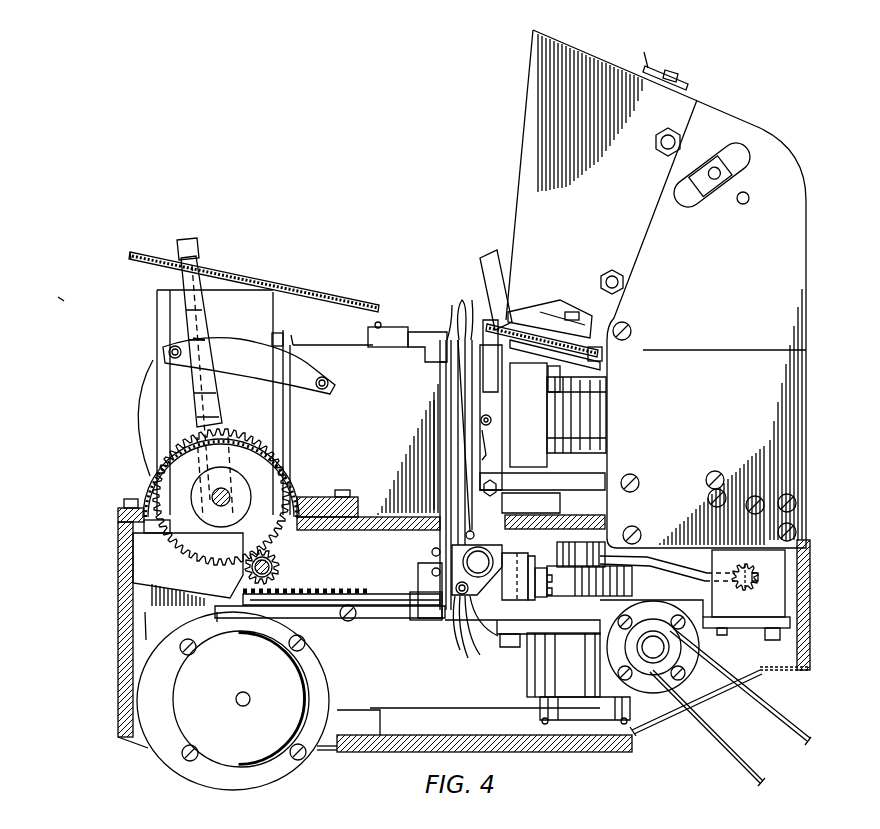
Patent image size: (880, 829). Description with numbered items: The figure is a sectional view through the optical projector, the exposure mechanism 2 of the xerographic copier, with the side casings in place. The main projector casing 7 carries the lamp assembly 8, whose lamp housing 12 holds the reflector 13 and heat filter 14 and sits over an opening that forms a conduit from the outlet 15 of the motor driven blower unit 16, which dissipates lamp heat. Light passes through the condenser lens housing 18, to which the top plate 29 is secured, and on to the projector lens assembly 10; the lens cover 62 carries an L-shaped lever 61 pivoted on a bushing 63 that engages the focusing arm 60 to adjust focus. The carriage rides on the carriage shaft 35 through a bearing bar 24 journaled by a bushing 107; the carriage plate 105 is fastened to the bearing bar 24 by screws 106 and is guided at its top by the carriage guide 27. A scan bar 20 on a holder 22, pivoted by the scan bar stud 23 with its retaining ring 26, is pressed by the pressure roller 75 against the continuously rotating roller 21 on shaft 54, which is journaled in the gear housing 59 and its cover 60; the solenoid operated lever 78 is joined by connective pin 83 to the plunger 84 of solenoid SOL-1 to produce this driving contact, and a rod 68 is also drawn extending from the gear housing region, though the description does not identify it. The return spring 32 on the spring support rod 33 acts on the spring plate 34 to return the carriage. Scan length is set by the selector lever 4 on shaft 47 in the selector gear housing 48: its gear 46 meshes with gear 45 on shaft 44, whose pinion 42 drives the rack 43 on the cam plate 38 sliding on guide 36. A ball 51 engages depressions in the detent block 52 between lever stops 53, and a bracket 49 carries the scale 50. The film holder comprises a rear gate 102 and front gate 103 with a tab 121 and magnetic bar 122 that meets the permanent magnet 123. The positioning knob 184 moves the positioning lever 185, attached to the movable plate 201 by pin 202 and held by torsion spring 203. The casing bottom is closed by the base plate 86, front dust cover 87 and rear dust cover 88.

The exposure mechanism 2 is at (112, 527).
The selector lever 4 is at (200, 243).
The main projector casing 7 is at (120, 600).
The lamp assembly 8 is at (145, 314).
The projector lens assembly 10 is at (652, 401).
The lamp housing 12 is at (182, 292).
The reflector 13 is at (153, 442).
The heat filter 14 is at (286, 420).
The blower outlet 15 is at (171, 592).
The motor driven blower unit 16 is at (330, 643).
The condenser lens housing 18 is at (318, 332).
The scan bar 20 is at (552, 590).
The roller 21 is at (632, 580).
The holder 22 is at (542, 551).
The scan bar stud 23 is at (535, 625).
The bearing bar 24 is at (525, 548).
The retaining ring 26 is at (514, 632).
The carriage guide 27 is at (413, 352).
The top plate 29 is at (373, 335).
The return spring 32 is at (462, 642).
The spring support rod 33 is at (452, 640).
The spring plate 34 is at (472, 644).
The carriage shaft 35 is at (482, 553).
The guide 36 is at (372, 624).
The cam plate 38 is at (388, 600).
The pinion 42 is at (278, 552).
The rack 43 is at (336, 596).
The shaft 44 is at (270, 566).
The gear 45 is at (272, 574).
The gear 46 is at (192, 548).
The shaft 47 is at (230, 490).
The selector gear housing 48 is at (299, 490).
The bracket 49 is at (130, 256).
The scale 50 is at (255, 283).
The ball 51 is at (208, 345).
The detent block 52 is at (250, 378).
The lever stops 53 is at (178, 362).
The shaft 54 is at (572, 546).
The gear housing 59 is at (528, 666).
The gear housing cover 60 is at (598, 349).
The lever 61 is at (556, 312).
The lens cover 62 is at (605, 360).
The bushing 63 is at (568, 368).
The rod 68 is at (782, 713).
The pressure roller 75 is at (492, 636).
The solenoid operated lever 78 is at (682, 558).
The connective pin 83 is at (760, 558).
The plunger 84 is at (752, 585).
The base plate 86 is at (585, 752).
The front dust cover 87 is at (712, 698).
The rear dust cover 88 is at (323, 755).
The rear gate 102 is at (450, 320).
The front gate 103 is at (468, 300).
The carriage plate 105 is at (440, 545).
The screws 106 is at (436, 556).
The bushing 107 is at (488, 529).
The tab 121 is at (478, 290).
The magnetic bar 122 is at (447, 370).
The permanent magnet 123 is at (480, 385).
The positioning knob 184 is at (505, 252).
The positioning lever 185 is at (525, 312).
The movable plate 201 is at (490, 440).
The pin 202 is at (492, 420).
The torsion spring 203 is at (495, 402).
The solenoid SOL-1 is at (785, 577).